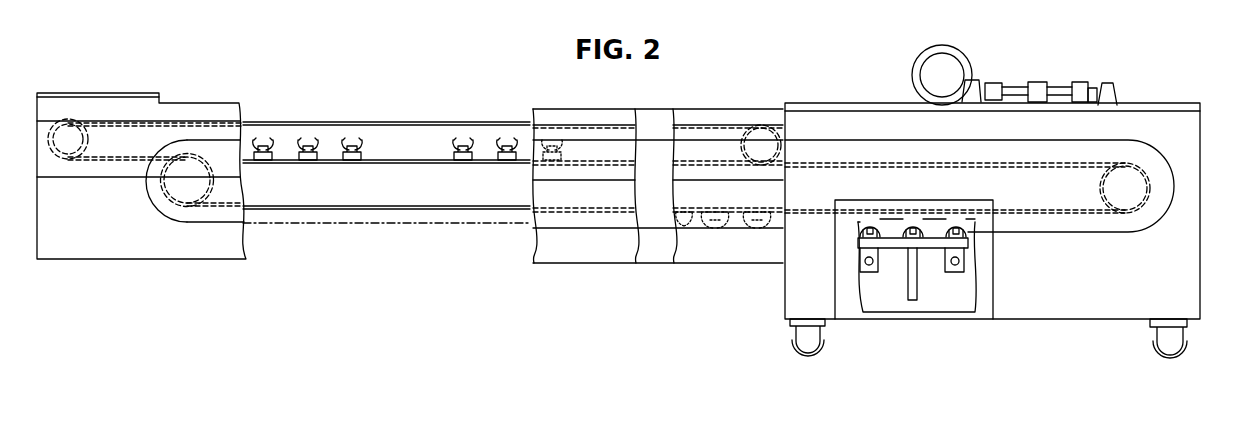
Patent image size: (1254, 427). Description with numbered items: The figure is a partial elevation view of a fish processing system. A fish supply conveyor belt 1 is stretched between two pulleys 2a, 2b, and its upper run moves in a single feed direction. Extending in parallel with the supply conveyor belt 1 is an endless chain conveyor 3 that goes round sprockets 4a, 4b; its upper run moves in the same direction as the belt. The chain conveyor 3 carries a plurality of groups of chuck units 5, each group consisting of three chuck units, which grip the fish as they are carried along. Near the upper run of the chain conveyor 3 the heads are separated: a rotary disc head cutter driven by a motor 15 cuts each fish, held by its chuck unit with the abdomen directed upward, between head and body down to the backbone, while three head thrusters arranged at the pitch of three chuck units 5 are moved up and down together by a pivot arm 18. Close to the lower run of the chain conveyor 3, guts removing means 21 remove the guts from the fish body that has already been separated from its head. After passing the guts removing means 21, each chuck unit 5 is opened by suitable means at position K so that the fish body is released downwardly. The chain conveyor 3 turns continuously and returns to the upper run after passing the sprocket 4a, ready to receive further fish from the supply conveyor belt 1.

The fish supply conveyor belt 1 is at (302, 122).
The pulley 2a is at (74, 126).
The pulley 2b is at (750, 128).
The chain conveyor 3 is at (440, 158).
The sprocket 4a is at (183, 206).
The sprocket 4b is at (1148, 178).
The chuck unit 5 is at (352, 140).
The motor 15 is at (950, 77).
The pivot arm 18 is at (1085, 84).
The position K is at (733, 258).
The guts removing means 21 is at (951, 302).